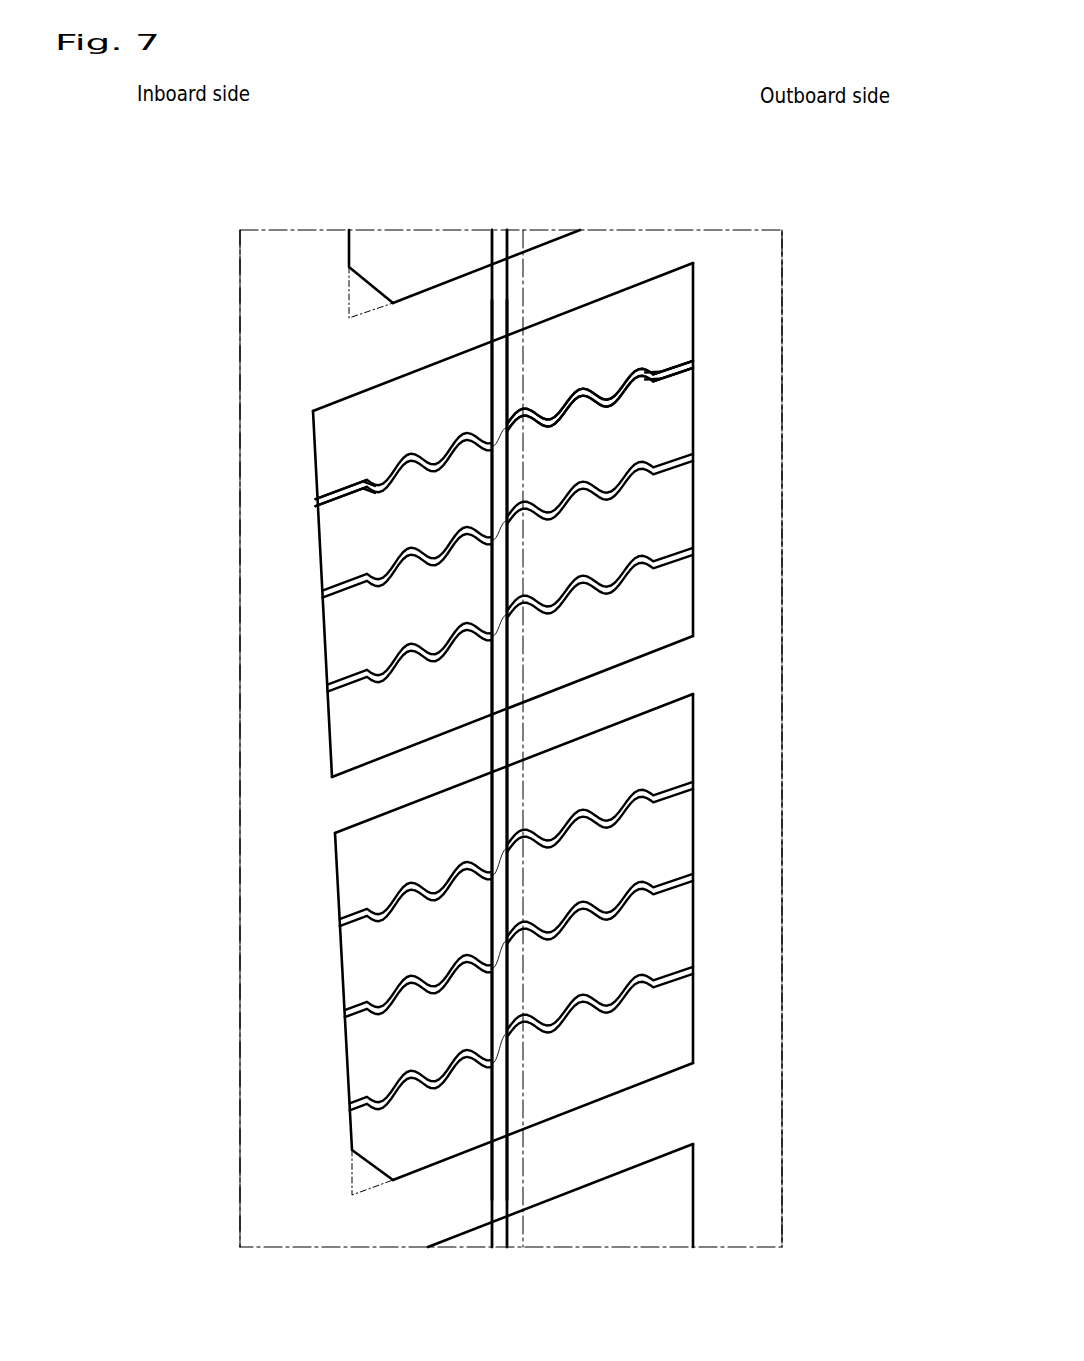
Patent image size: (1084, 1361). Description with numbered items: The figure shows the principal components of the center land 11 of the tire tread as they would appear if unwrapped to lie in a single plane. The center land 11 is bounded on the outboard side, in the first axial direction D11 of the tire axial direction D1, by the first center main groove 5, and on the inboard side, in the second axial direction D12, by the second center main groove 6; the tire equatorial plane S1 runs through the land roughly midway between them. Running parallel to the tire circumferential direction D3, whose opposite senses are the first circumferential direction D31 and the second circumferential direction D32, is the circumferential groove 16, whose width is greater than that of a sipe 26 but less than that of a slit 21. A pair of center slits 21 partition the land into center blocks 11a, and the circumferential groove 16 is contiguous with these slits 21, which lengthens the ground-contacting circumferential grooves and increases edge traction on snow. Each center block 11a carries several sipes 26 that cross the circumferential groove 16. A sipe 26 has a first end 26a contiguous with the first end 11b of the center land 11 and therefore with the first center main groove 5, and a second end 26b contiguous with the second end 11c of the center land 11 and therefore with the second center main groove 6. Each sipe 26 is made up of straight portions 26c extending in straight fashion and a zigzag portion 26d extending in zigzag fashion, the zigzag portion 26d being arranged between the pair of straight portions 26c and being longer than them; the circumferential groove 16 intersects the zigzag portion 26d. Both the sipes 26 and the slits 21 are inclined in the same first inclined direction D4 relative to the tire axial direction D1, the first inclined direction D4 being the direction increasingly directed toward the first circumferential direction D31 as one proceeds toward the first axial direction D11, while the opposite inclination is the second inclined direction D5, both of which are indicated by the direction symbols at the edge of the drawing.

The first center main groove 5 is at (735, 238).
The second center main groove 6 is at (291, 244).
The center land 11 is at (511, 238).
The center block 11a is at (323, 430).
The first end of center land 11b is at (693, 297).
The second end of center land 11c is at (350, 267).
The circumferential groove 16 is at (488, 398).
The center slit 21 is at (370, 345).
The sipe 26 is at (638, 404).
The first end of sipe 26a is at (693, 357).
The second end of sipe 26b is at (318, 505).
The straight portion 26c is at (670, 367).
The zigzag portion 26d is at (575, 388).
The tire equatorial plane S1 is at (523, 1168).
The tire axial direction D1 is at (575, 119).
The first axial direction D11 is at (773, 120).
The second axial direction D12 is at (248, 118).
The tire circumferential direction D3 is at (904, 682).
The first circumferential direction D31 is at (903, 664).
The second circumferential direction D32 is at (904, 804).
The first inclined direction D4 is at (893, 1300).
The second inclined direction D5 is at (933, 1259).